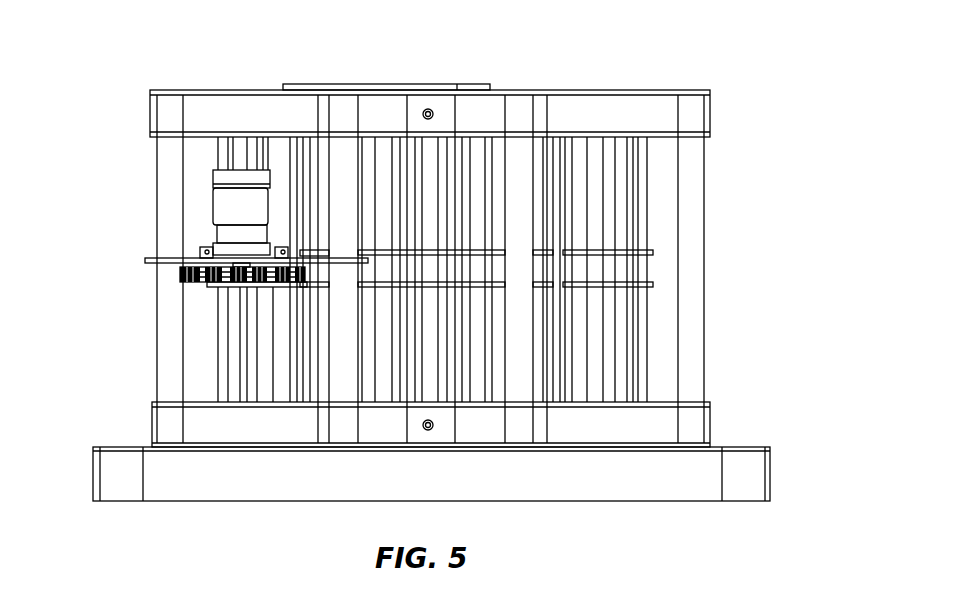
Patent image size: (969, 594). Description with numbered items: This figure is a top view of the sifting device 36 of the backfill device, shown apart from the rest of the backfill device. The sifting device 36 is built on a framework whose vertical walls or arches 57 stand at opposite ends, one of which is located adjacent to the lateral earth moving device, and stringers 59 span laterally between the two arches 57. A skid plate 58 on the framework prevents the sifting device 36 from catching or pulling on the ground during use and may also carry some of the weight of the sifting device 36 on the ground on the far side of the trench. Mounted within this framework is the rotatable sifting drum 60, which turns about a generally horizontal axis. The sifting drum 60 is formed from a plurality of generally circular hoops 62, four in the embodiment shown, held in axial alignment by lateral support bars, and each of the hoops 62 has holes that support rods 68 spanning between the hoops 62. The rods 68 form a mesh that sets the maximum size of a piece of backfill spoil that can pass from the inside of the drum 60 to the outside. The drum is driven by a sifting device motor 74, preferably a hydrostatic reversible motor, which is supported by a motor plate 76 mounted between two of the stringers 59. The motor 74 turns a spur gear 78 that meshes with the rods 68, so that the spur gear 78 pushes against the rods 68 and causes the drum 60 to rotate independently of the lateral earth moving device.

The sifting device 36 is at (250, 57).
The arches 57 is at (635, 100).
The skid plate 58 is at (93, 487).
The stringers 59 is at (163, 170).
The sifting drum 60 is at (652, 207).
The hoops 62 is at (653, 250).
The rods 68 is at (372, 147).
The sifting device motor 74 is at (222, 203).
The motor plate 76 is at (164, 257).
The spur gear 78 is at (180, 275).